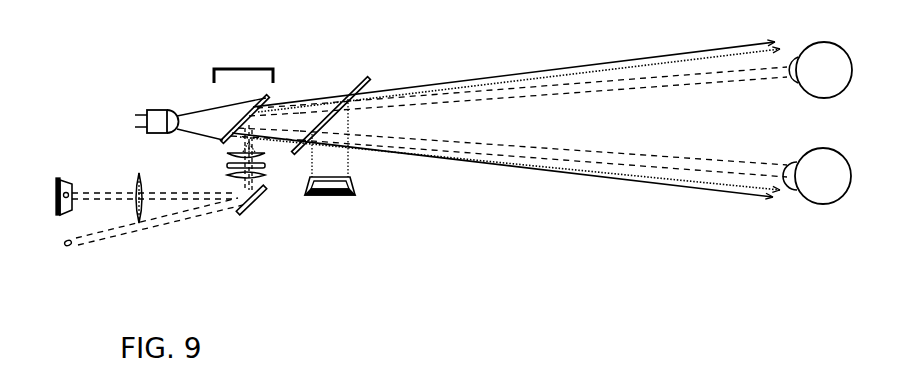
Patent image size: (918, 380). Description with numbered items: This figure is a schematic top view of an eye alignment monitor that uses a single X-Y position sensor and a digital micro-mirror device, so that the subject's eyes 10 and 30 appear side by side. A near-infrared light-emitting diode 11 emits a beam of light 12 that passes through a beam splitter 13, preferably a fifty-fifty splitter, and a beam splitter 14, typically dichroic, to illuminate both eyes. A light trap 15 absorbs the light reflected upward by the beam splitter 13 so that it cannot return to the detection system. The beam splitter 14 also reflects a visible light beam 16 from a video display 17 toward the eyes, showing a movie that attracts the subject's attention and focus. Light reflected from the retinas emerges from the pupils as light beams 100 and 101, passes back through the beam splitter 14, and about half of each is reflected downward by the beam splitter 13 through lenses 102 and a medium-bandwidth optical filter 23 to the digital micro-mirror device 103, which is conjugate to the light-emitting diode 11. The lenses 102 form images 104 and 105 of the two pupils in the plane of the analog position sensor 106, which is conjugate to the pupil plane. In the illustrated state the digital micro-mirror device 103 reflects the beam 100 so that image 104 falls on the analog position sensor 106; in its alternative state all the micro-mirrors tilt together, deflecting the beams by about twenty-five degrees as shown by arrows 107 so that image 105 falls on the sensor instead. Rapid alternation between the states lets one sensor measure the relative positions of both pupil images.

The left eye 10 is at (827, 208).
The near-infrared light-emitting diode 11 is at (160, 108).
The beam of light 12 is at (196, 121).
The beam splitter 13 is at (274, 95).
The beam splitter 14 is at (367, 82).
The light trap 15 is at (249, 65).
The visible light beam 16 is at (334, 160).
The video display 17 is at (358, 193).
The medium-bandwidth transmission optical filter 23 is at (268, 168).
The eye 30 is at (834, 96).
The light beam 100 is at (650, 163).
The light beam 101 is at (653, 86).
The lenses 102 is at (226, 156).
The digital micro-mirror device 103 is at (253, 214).
The image 104 is at (70, 192).
The image 105 is at (72, 248).
The analog position sensor 106 is at (69, 176).
The arrows 107 is at (140, 224).